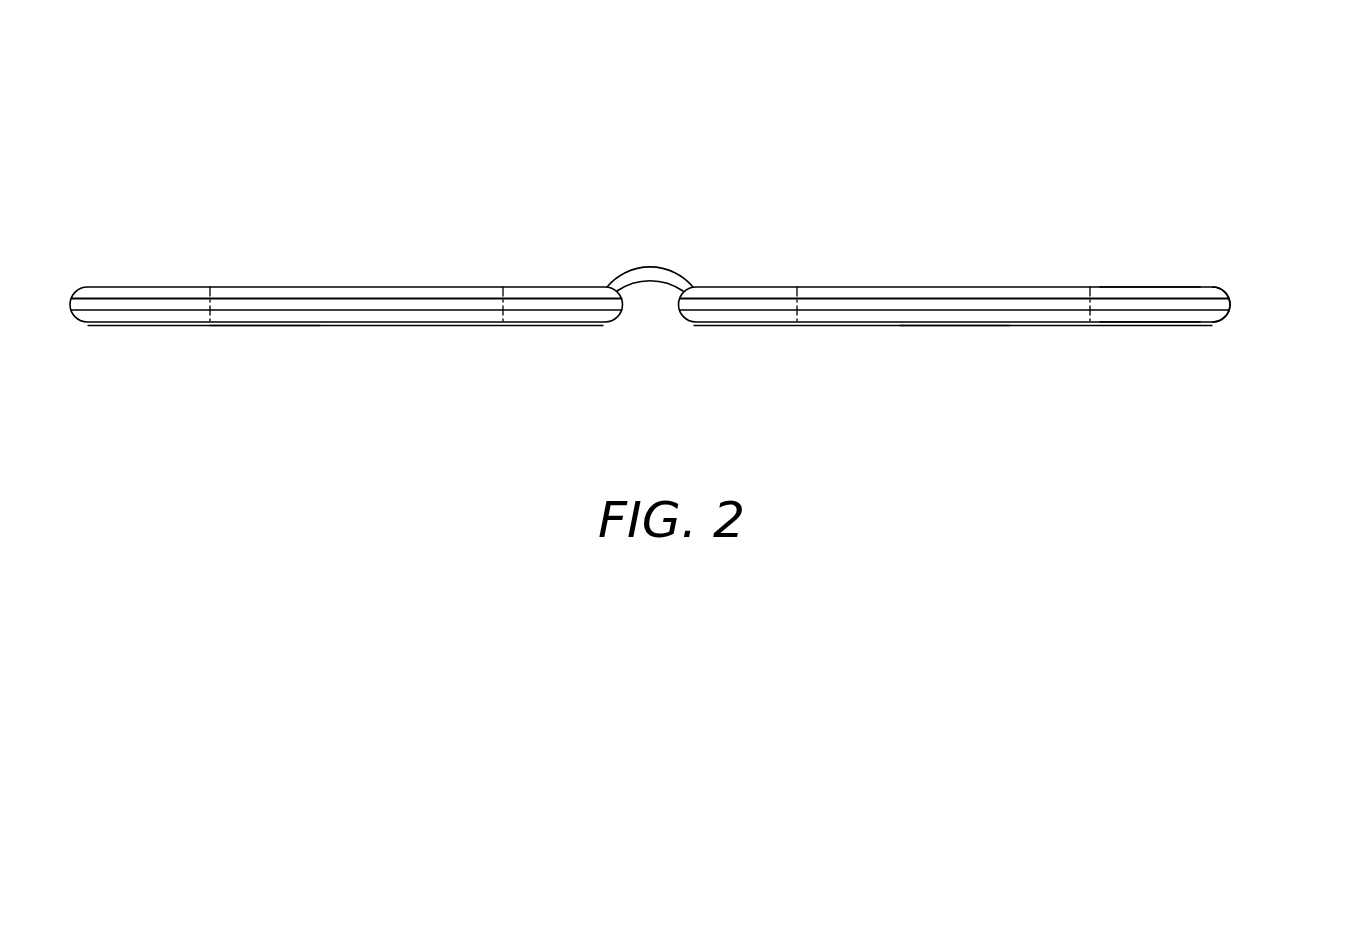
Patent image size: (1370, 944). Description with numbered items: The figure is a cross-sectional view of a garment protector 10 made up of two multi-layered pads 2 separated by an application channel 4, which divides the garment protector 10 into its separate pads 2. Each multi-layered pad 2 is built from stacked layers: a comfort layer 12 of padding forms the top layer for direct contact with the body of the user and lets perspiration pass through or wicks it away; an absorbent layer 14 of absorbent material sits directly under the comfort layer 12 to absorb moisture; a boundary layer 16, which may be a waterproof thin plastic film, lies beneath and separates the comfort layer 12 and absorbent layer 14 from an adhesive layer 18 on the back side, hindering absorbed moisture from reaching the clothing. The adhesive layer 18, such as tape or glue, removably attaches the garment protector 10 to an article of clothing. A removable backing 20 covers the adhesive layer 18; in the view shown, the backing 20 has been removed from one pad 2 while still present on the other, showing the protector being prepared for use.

The garment protector 10 is at (716, 255).
The multi-layered pad 2 is at (355, 275).
The application channel 4 is at (650, 296).
The comfort layer 12 is at (1153, 285).
The absorbent layer 14 is at (1218, 302).
The boundary layer 16 is at (1155, 323).
The adhesive layer 18 is at (955, 323).
The removable backing 20 is at (263, 327).